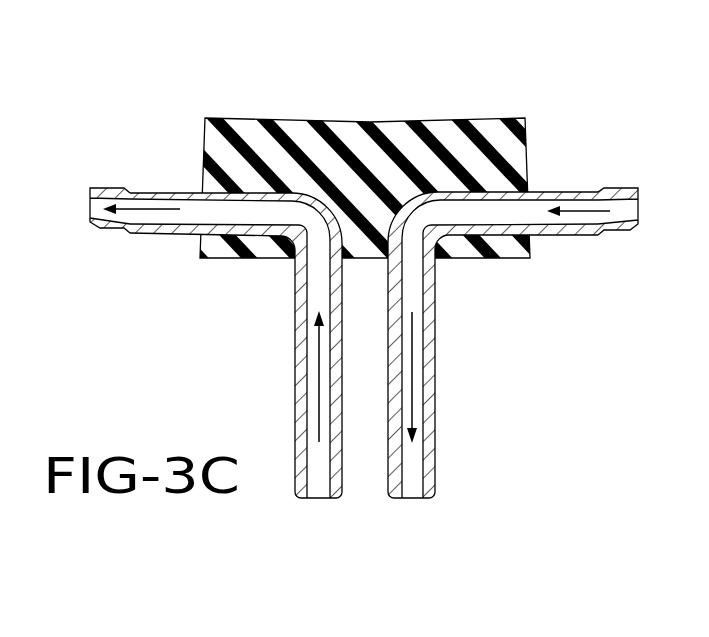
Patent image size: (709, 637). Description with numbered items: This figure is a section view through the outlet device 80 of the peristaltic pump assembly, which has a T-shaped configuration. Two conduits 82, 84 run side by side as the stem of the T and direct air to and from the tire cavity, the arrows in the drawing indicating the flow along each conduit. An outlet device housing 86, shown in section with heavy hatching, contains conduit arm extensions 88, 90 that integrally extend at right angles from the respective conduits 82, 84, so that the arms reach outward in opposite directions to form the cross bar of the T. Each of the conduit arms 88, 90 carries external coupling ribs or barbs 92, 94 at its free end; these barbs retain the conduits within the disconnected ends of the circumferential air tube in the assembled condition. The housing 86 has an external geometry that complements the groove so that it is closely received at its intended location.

The outlet device 80 is at (364, 265).
The conduit 82 is at (302, 353).
The conduit 84 is at (437, 355).
The outlet device housing 86 is at (388, 125).
The conduit arm extension 88 is at (560, 233).
The conduit arm extension 90 is at (175, 231).
The external coupling rib or barb 92 is at (593, 192).
The external coupling rib or barb 94 is at (130, 191).